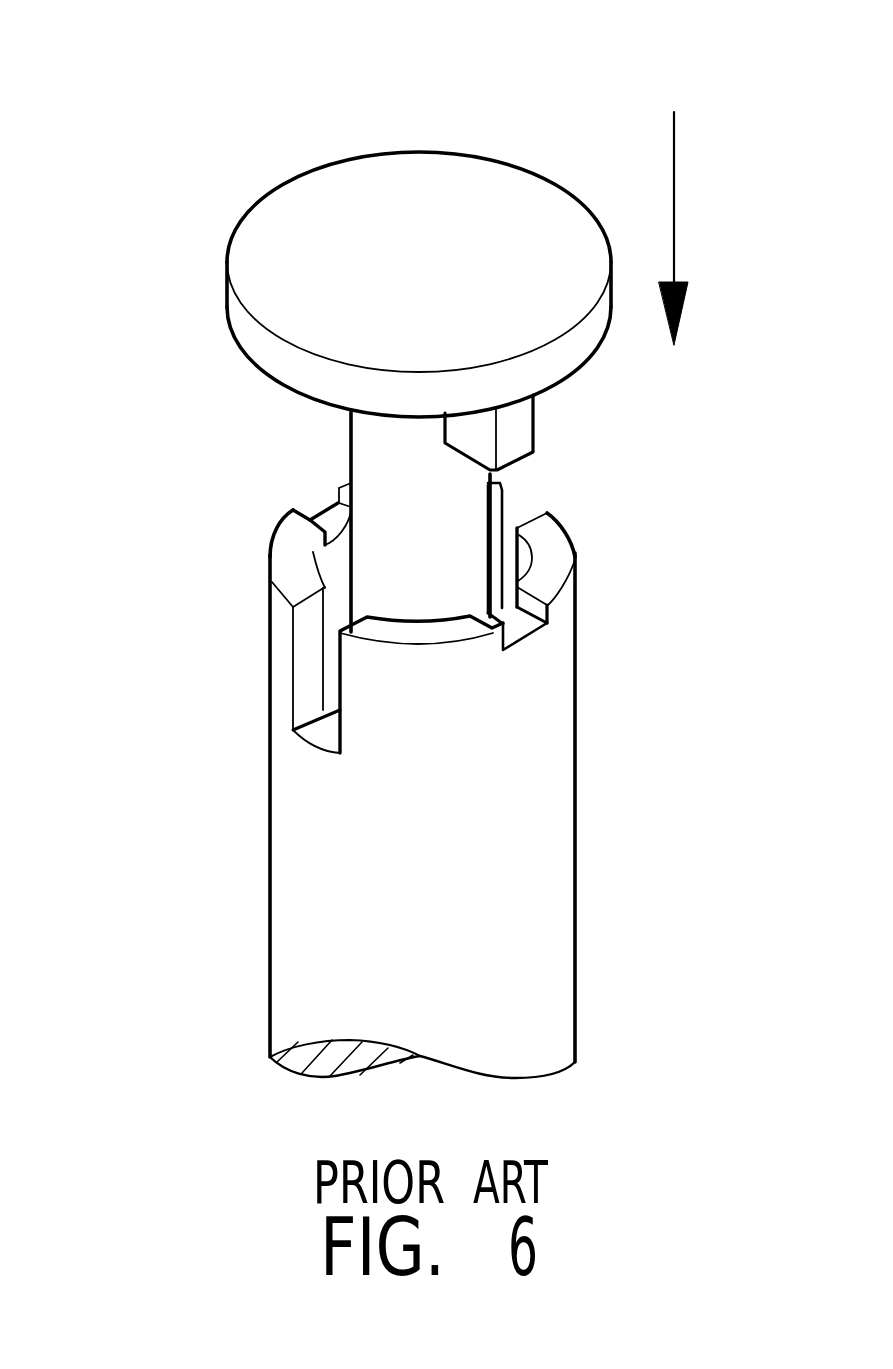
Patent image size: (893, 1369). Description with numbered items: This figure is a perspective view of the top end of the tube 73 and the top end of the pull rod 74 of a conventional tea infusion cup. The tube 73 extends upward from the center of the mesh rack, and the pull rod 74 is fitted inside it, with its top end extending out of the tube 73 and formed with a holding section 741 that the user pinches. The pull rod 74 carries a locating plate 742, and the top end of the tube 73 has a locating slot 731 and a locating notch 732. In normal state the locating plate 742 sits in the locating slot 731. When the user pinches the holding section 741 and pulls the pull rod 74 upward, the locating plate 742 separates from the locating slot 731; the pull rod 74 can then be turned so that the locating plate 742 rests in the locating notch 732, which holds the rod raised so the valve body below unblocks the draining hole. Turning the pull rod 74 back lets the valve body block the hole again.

The tube 73 is at (385, 892).
The locating slot 731 is at (310, 662).
The locating notch 732 is at (520, 622).
The pull rod 74 is at (378, 477).
The holding section 741 is at (343, 228).
The locating plate 742 is at (517, 435).